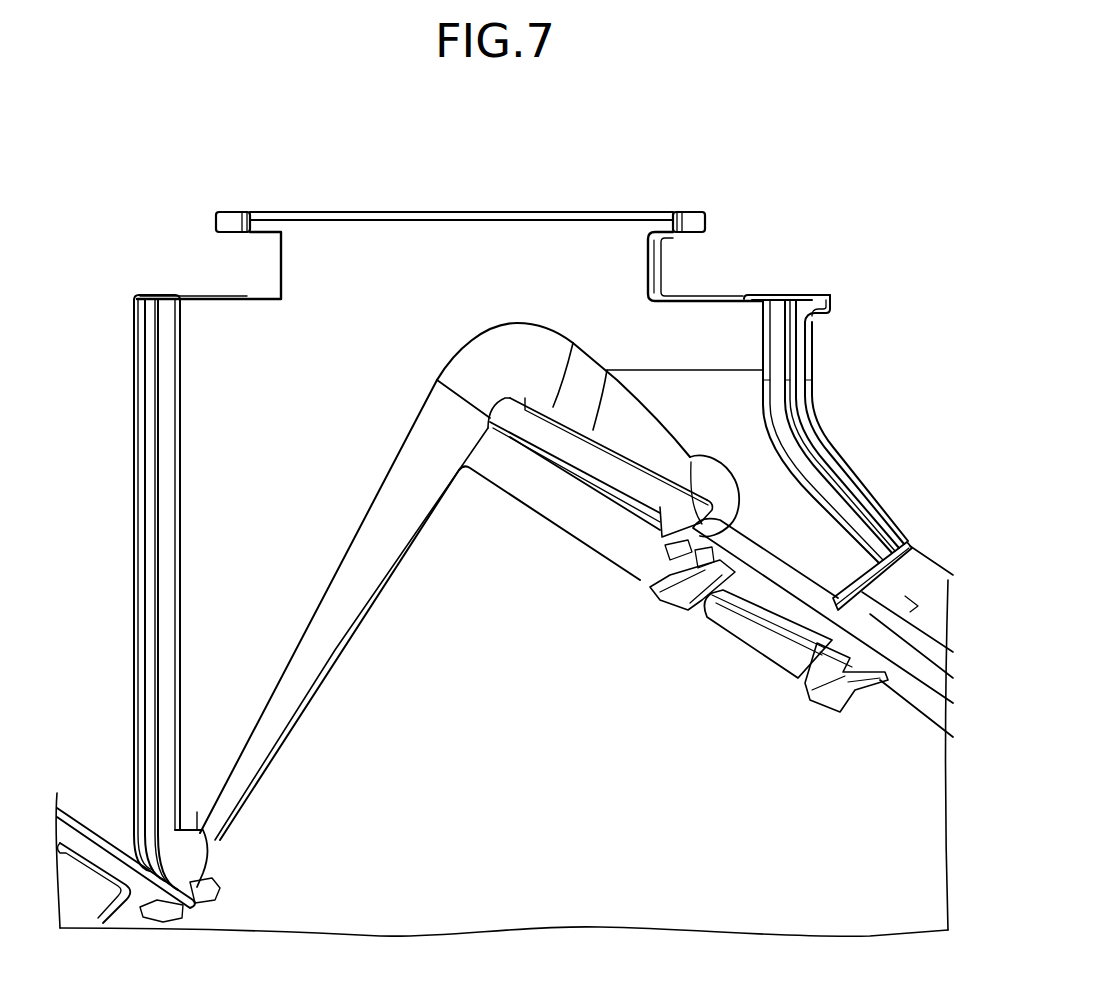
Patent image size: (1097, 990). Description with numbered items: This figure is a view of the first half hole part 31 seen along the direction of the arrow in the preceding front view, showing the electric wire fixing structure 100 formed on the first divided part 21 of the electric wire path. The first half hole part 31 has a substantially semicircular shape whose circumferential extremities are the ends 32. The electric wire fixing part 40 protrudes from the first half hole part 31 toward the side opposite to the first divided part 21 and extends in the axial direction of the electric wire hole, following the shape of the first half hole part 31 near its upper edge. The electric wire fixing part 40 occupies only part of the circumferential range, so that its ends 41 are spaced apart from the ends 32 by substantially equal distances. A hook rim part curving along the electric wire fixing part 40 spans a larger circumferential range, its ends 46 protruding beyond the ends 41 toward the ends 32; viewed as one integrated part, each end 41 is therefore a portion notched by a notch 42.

The electric wire fixing structure 100 is at (556, 194).
The first divided part 21 is at (122, 432).
The first half hole part 31 is at (745, 298).
The ends of the first half hole part 32 is at (167, 329).
The electric wire fixing part 40 is at (462, 240).
The ends of the electric wire fixing part 41 is at (277, 258).
The notch 42 is at (663, 257).
The ends of the hook rim part 46 is at (228, 222).